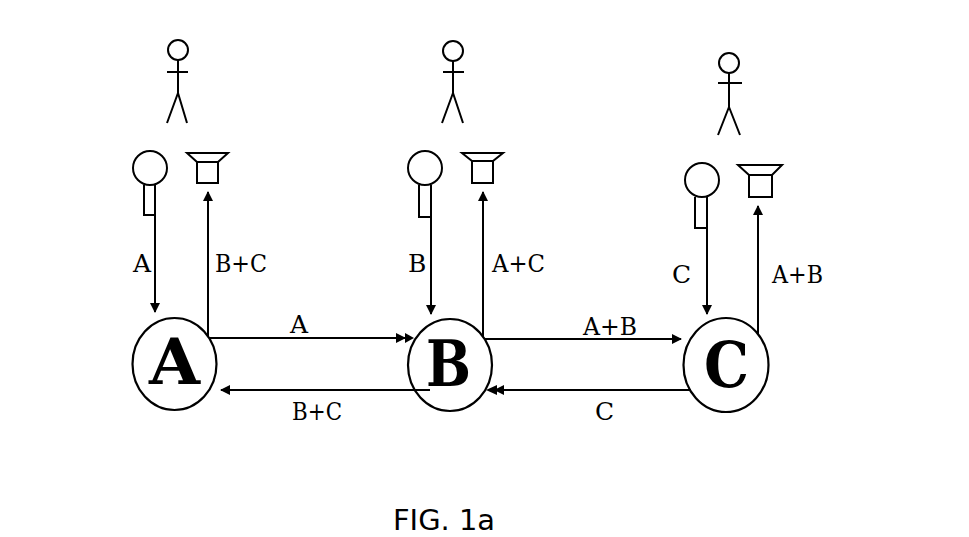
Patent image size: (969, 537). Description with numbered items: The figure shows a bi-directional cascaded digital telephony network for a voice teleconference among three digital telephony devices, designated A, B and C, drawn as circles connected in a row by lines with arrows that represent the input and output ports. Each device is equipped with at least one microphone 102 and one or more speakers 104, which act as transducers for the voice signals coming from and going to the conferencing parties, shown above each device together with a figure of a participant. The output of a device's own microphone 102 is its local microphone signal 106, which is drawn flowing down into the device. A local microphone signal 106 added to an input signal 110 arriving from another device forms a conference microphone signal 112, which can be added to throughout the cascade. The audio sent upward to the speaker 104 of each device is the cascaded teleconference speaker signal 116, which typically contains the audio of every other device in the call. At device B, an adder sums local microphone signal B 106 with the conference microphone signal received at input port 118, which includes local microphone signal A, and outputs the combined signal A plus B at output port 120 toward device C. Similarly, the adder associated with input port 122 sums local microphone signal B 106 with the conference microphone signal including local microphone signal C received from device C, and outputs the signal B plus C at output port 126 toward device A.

The microphone 102 is at (134, 167).
The speaker 104 is at (218, 170).
The local microphone signal 106 is at (154, 293).
The input signal 110 is at (282, 338).
The conference microphone signal 112 is at (251, 391).
The cascaded teleconference speaker signal 116 is at (208, 213).
The input port 118 is at (411, 336).
The output port 120 is at (484, 336).
The input port 122 is at (488, 392).
The output port 126 is at (416, 392).